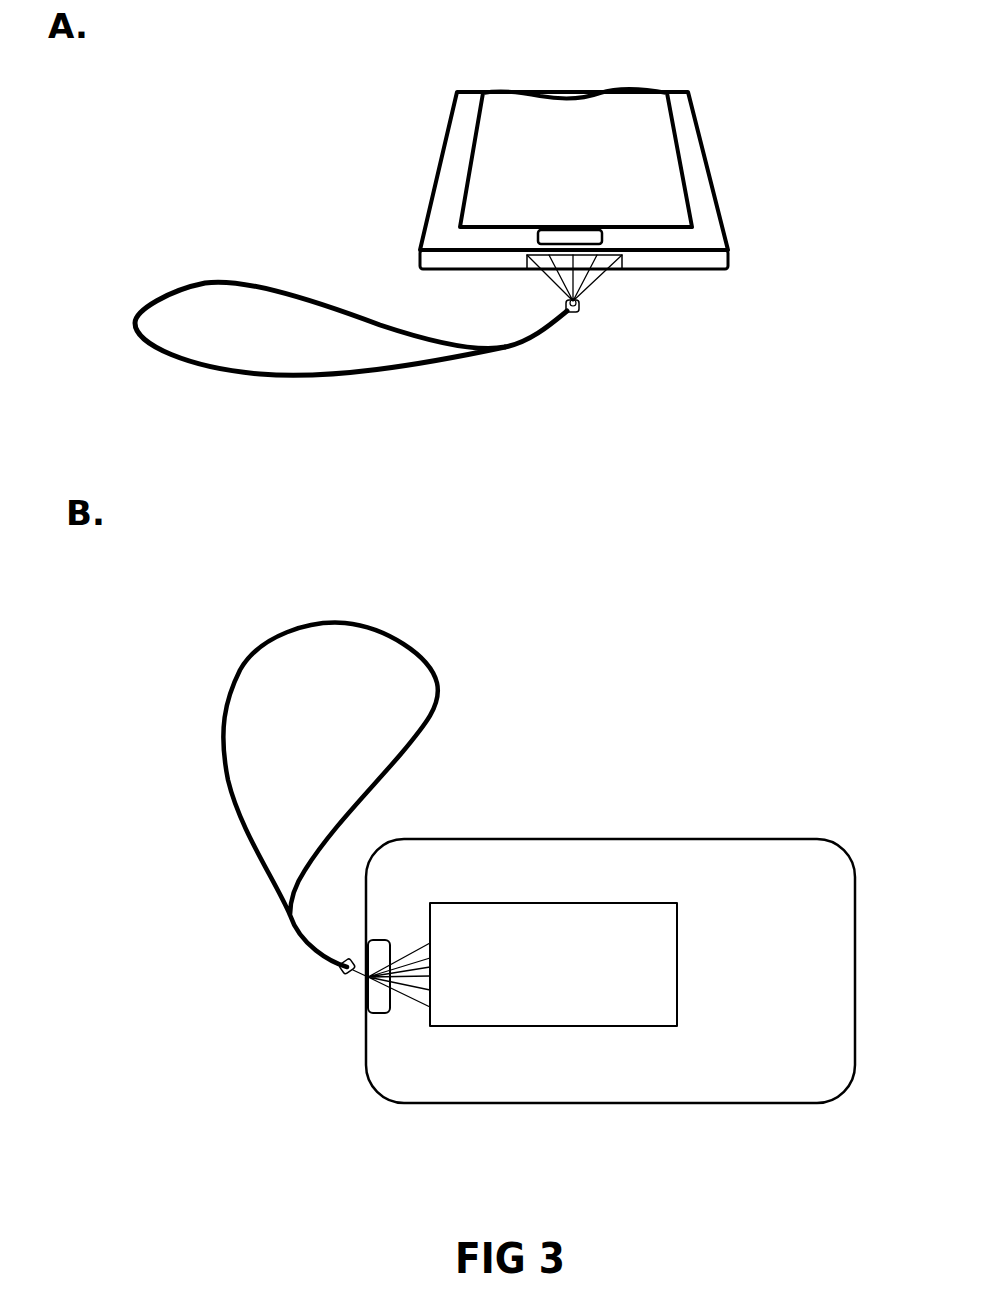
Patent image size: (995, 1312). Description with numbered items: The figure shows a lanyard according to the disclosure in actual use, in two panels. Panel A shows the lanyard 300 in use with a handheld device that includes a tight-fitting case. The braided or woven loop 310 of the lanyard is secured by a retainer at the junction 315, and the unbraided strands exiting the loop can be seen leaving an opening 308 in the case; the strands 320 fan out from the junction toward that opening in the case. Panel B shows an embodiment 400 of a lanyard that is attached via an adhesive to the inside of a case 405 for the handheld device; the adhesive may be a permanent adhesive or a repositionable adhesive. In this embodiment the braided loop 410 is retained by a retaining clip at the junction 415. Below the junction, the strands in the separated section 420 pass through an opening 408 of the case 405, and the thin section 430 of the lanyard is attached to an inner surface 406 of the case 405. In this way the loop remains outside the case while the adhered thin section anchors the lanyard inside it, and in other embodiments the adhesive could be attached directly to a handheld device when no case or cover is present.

The lanyard 300 is at (203, 93).
The braided or woven loop 310 is at (160, 285).
The opening 308 is at (527, 262).
The junction 315 is at (580, 320).
The conductive wires 320 is at (603, 288).
The lanyard embodiment 400 is at (223, 600).
The braided loop 410 is at (432, 675).
The junction 415 is at (352, 962).
The case 405 is at (770, 837).
The inner surface 406 is at (818, 927).
The opening 408 is at (365, 1003).
The separated section 420 is at (415, 1027).
The thin section 430 is at (533, 933).